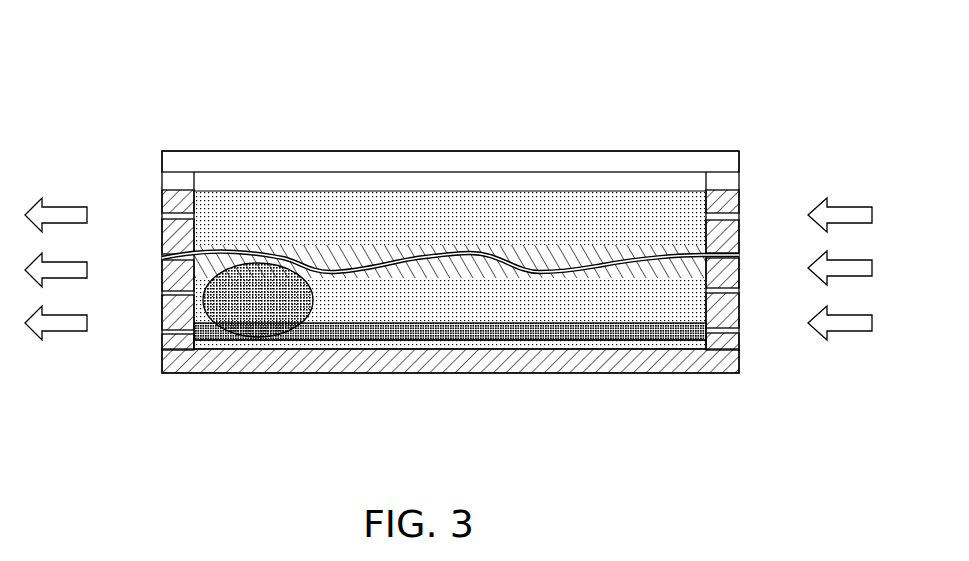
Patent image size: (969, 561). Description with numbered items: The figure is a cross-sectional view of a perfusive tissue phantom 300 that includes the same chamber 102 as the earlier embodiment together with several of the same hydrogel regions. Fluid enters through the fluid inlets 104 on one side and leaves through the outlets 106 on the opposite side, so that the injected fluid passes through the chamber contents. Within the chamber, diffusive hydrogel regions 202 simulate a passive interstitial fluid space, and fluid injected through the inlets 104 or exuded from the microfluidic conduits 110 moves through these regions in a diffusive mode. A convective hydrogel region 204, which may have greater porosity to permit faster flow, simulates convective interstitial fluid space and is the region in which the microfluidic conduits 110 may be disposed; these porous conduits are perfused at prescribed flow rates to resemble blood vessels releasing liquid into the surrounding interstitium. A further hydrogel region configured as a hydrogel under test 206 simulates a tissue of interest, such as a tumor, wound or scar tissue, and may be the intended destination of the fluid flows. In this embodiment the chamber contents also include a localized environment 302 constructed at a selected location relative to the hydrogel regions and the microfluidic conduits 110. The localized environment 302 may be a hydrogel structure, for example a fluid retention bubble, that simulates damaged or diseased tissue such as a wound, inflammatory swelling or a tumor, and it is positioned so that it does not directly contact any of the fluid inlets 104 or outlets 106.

The tissue phantom 300 is at (174, 74).
The chamber 102 is at (570, 375).
The fluid inlets 104 is at (748, 221).
The outlets 106 is at (154, 292).
The microfluidic conduits 110 is at (447, 258).
The diffusive hydrogel regions 202 is at (659, 205).
The convective hydrogel region 204 is at (470, 272).
The hydrogel under test 206 is at (347, 341).
The localized environment 302 is at (255, 320).